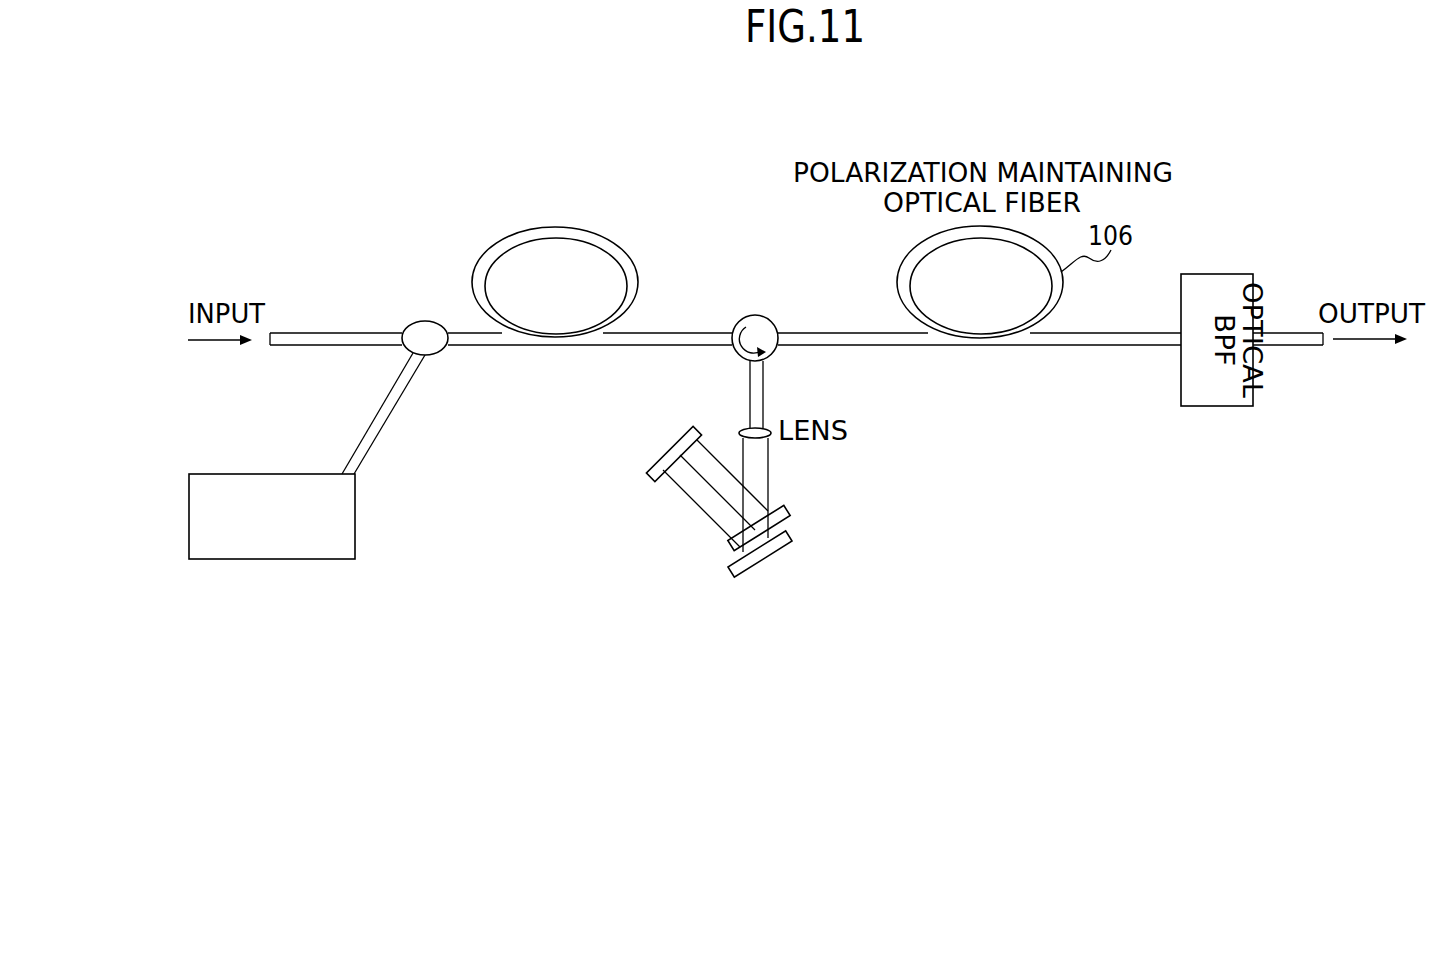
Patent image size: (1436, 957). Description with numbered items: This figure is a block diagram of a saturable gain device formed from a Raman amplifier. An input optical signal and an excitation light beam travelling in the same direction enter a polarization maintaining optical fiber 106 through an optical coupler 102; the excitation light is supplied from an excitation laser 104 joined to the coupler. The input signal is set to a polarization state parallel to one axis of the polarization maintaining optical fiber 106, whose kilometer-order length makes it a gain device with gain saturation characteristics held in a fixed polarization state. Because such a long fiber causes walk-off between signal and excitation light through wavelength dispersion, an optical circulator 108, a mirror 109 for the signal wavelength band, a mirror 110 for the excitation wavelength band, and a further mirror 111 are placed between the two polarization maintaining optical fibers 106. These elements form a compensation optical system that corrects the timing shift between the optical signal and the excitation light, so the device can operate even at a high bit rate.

The optical coupler 102 is at (418, 324).
The excitation laser 104 is at (355, 504).
The polarization maintaining optical fiber 106 is at (636, 272).
The optical circulator 108 is at (770, 357).
The mirror used in the signal wavelength band 109 is at (730, 548).
The mirror used in the excitation wavelength band 110 is at (762, 576).
The mirror 111 is at (660, 452).